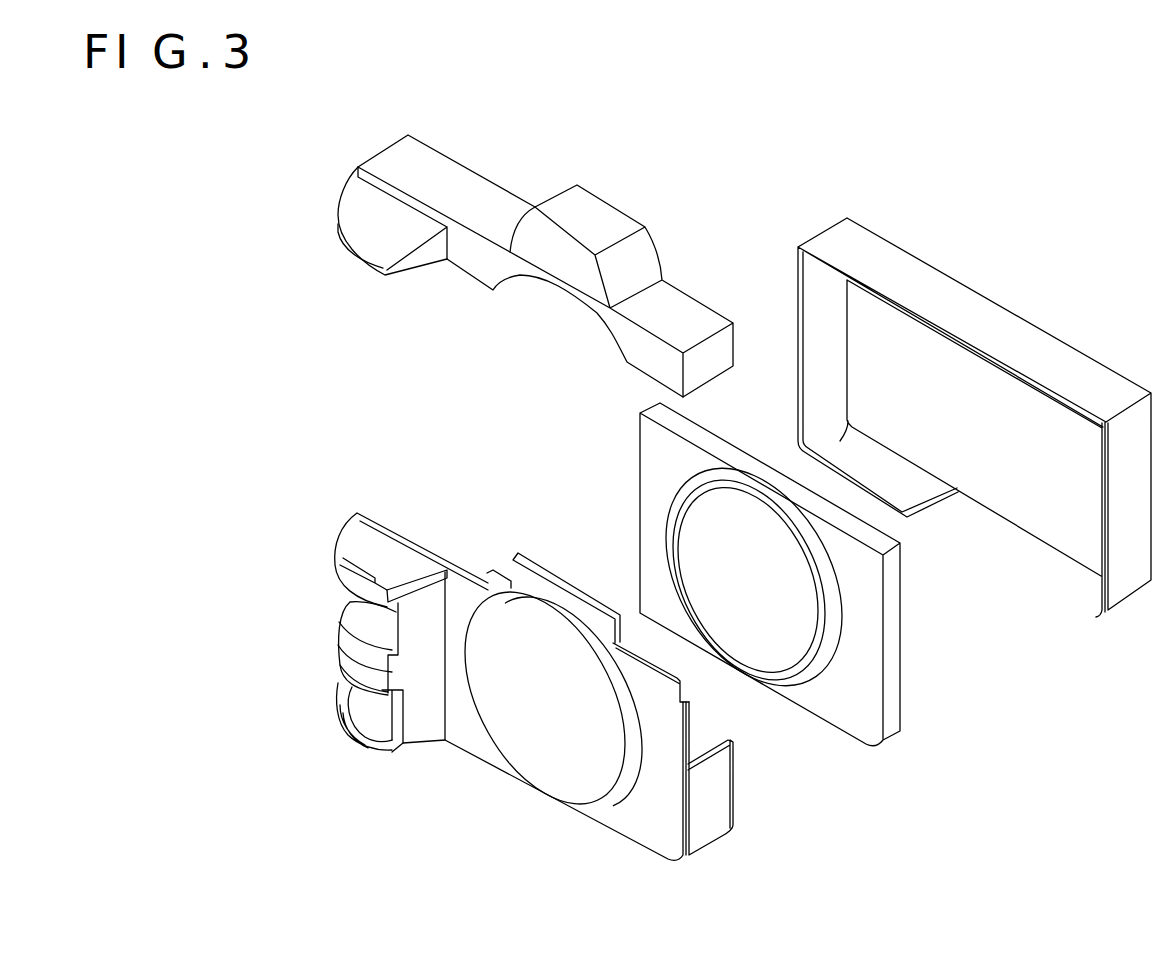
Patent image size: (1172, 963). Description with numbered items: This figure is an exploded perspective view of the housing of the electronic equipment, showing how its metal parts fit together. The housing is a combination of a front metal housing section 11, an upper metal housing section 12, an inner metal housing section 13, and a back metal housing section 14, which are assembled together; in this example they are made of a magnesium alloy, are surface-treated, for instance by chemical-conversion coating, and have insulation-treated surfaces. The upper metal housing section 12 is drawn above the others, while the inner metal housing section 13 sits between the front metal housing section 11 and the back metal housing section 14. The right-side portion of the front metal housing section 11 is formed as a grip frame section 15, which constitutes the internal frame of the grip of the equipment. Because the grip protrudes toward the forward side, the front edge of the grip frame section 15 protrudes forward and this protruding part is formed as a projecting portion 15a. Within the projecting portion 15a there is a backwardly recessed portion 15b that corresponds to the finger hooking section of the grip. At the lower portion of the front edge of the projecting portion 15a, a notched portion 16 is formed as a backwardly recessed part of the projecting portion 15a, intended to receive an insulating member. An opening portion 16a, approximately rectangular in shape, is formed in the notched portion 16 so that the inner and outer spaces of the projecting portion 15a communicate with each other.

The front metal housing section 11 is at (660, 833).
The upper metal housing section 12 is at (448, 187).
The inner metal housing section 13 is at (887, 702).
The back metal housing section 14 is at (968, 310).
The grip frame section 15 is at (358, 489).
The projecting portion 15a is at (382, 665).
The recessed portion 15b is at (363, 616).
The notched portion 16 is at (339, 700).
The opening portion 16a is at (372, 715).